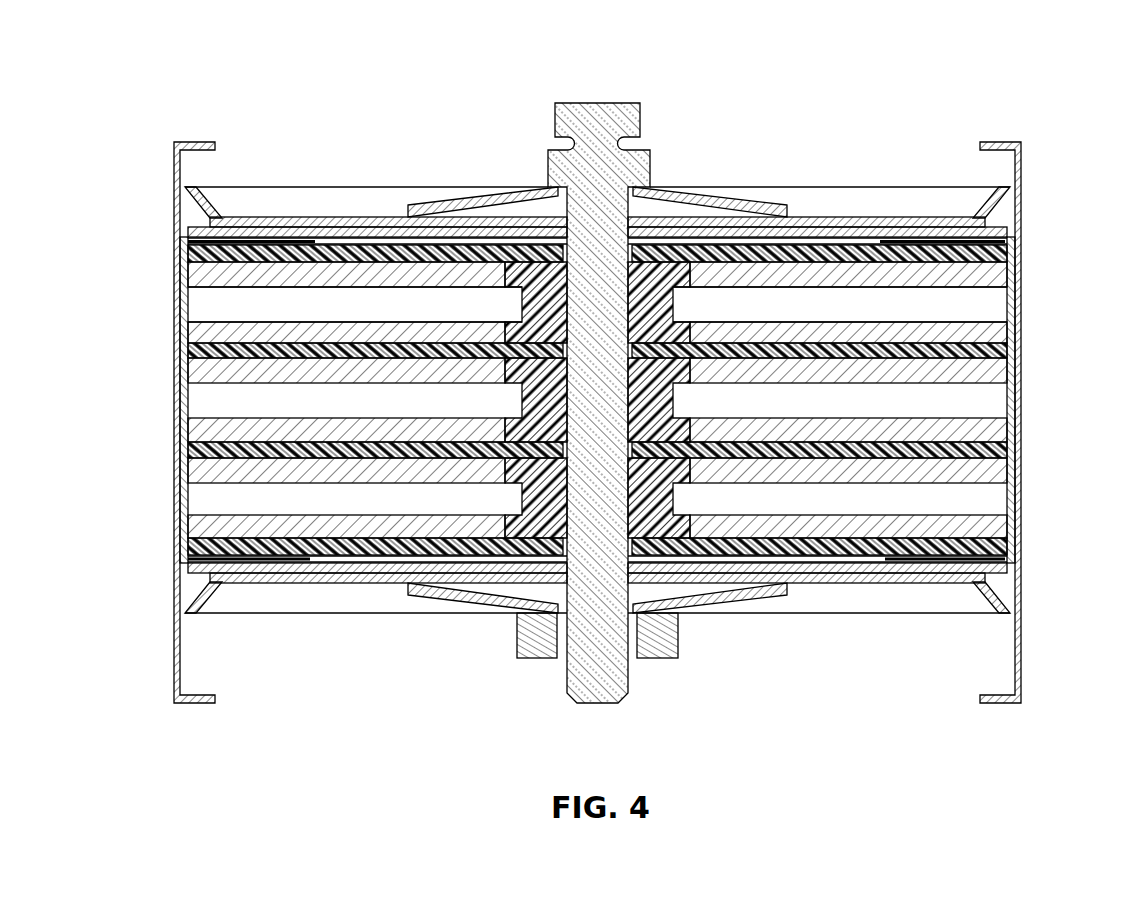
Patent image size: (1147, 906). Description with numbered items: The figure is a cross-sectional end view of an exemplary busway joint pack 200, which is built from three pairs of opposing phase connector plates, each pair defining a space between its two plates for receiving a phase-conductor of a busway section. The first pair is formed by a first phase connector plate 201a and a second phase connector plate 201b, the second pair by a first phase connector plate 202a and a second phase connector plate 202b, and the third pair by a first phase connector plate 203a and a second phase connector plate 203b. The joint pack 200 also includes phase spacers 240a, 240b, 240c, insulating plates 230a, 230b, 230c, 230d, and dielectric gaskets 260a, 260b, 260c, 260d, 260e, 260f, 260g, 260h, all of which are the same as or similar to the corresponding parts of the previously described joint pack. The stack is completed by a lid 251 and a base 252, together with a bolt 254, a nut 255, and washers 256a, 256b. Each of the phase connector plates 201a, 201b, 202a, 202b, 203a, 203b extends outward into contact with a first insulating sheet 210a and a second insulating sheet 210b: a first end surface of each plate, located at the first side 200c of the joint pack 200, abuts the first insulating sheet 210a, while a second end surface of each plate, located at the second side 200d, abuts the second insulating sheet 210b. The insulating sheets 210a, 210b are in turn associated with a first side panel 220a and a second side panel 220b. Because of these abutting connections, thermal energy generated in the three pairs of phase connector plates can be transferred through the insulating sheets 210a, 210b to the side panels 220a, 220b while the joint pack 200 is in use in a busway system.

The busway joint pack 200 is at (135, 70).
The first side of the joint pack 200c is at (149, 461).
The second side of the joint pack 200d is at (1054, 391).
The first side panel 220a is at (180, 612).
The second side panel 220b is at (1018, 594).
The insulating plate 230a is at (186, 283).
The insulating plate 230b is at (186, 376).
The insulating plate 230c is at (186, 476).
The insulating plate 230d is at (184, 566).
The lid 251 is at (265, 200).
The base 252 is at (275, 604).
The bolt 254 is at (604, 118).
The nut 255 is at (663, 645).
The washer 256a is at (712, 200).
The washer 256b is at (462, 606).
The dielectric gasket 260a is at (195, 241).
The dielectric gasket 260b is at (195, 342).
The dielectric gasket 260c is at (195, 441).
The dielectric gasket 260d is at (195, 541).
The dielectric gasket 260e is at (1007, 257).
The dielectric gasket 260f is at (1007, 355).
The dielectric gasket 260g is at (1000, 462).
The dielectric gasket 260h is at (1008, 555).
The first phase connector plate 201a is at (304, 278).
The second phase connector plate 201b is at (418, 330).
The first phase connector plate 202a is at (240, 376).
The second phase connector plate 202b is at (852, 425).
The first phase connector plate 203a is at (815, 522).
The second phase connector plate 203b is at (378, 522).
The first insulating sheet 210a is at (195, 312).
The second insulating sheet 210b is at (1003, 297).
The phase spacer 240a is at (648, 295).
The phase spacer 240b is at (520, 415).
The phase spacer 240c is at (650, 488).